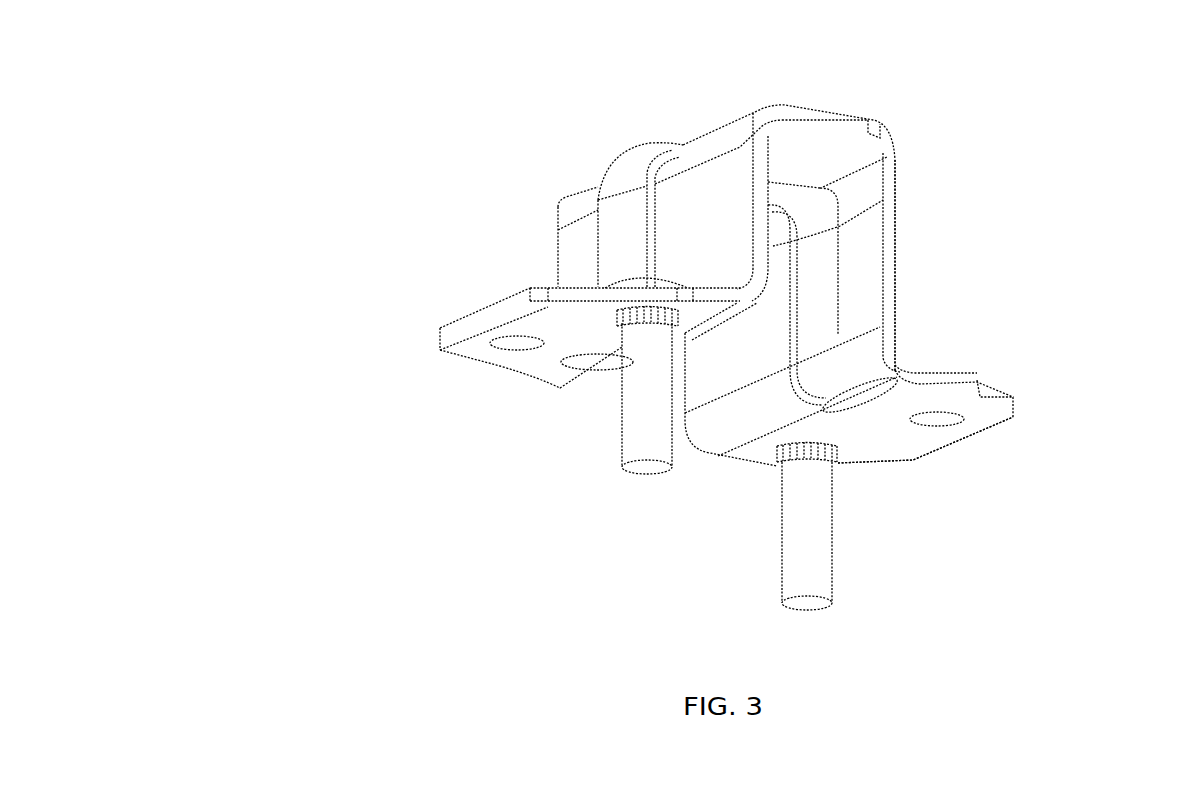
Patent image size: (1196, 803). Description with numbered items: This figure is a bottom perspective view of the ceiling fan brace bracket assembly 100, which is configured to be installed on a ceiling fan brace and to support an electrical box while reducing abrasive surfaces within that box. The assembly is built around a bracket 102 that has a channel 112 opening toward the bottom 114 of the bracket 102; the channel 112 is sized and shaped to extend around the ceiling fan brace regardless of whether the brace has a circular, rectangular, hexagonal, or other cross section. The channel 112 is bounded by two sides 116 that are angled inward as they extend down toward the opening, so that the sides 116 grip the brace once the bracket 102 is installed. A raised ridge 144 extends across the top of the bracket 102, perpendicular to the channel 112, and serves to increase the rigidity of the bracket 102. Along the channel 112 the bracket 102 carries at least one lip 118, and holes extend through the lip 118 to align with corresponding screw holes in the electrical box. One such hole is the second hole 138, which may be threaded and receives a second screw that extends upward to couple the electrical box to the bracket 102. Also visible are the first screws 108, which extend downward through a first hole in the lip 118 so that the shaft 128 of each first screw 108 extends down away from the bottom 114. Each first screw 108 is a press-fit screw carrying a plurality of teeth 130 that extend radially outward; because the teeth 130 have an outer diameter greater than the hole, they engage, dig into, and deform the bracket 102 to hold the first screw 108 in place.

The bracket assembly 100 is at (330, 186).
The bracket 102 is at (700, 155).
The channel 112 is at (807, 163).
The raised ridge 144 is at (623, 243).
The sides 116 is at (888, 243).
The lip 118 is at (473, 347).
The second hole 138 is at (512, 343).
The bottom 114 is at (900, 440).
The teeth 130 is at (645, 310).
The shaft 128 is at (640, 425).
The first screw 108 is at (648, 470).